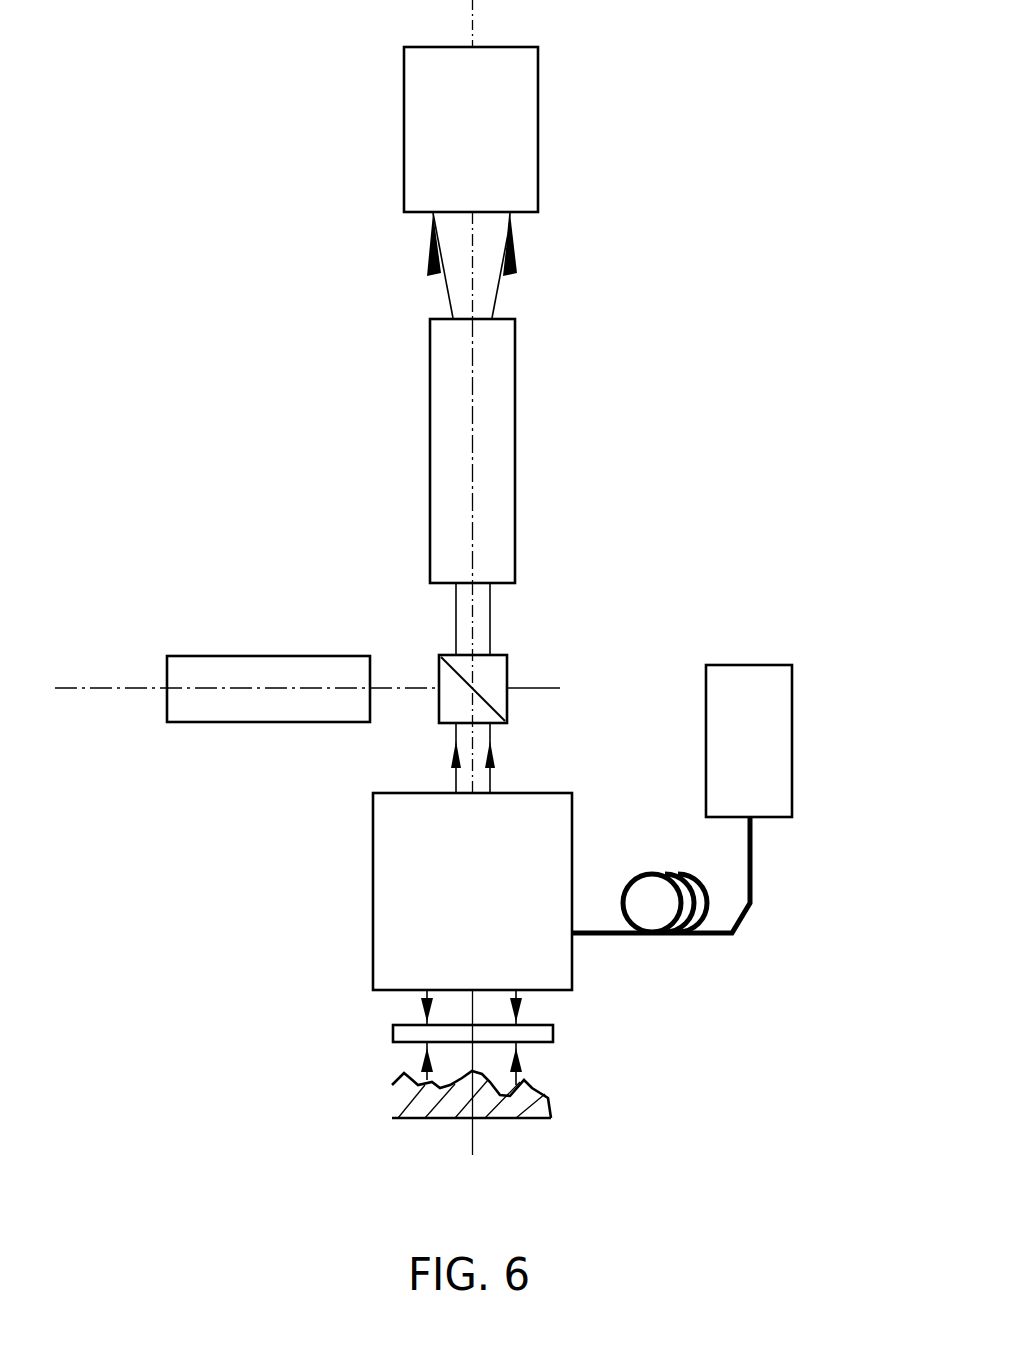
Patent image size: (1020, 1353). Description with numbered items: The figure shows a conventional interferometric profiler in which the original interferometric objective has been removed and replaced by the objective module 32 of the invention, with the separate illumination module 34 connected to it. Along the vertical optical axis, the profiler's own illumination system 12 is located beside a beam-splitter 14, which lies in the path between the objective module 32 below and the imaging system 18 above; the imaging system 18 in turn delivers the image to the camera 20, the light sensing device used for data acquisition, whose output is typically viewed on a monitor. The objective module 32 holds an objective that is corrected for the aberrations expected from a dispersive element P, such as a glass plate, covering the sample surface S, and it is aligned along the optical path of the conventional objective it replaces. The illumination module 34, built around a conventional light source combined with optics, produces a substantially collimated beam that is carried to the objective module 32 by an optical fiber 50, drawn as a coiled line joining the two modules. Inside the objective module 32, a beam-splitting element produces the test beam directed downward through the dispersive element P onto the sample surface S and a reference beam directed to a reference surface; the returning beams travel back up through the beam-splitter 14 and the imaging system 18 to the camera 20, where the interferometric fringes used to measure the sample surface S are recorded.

The illumination system 12 is at (185, 675).
The beam-splitter 14 is at (500, 668).
The imaging system 18 is at (492, 460).
The camera 20 is at (520, 101).
The objective module 32 is at (385, 885).
The illumination module 34 is at (770, 694).
The optical fiber 50 is at (745, 914).
The dispersive element P is at (553, 1035).
The sample surface S is at (548, 1097).